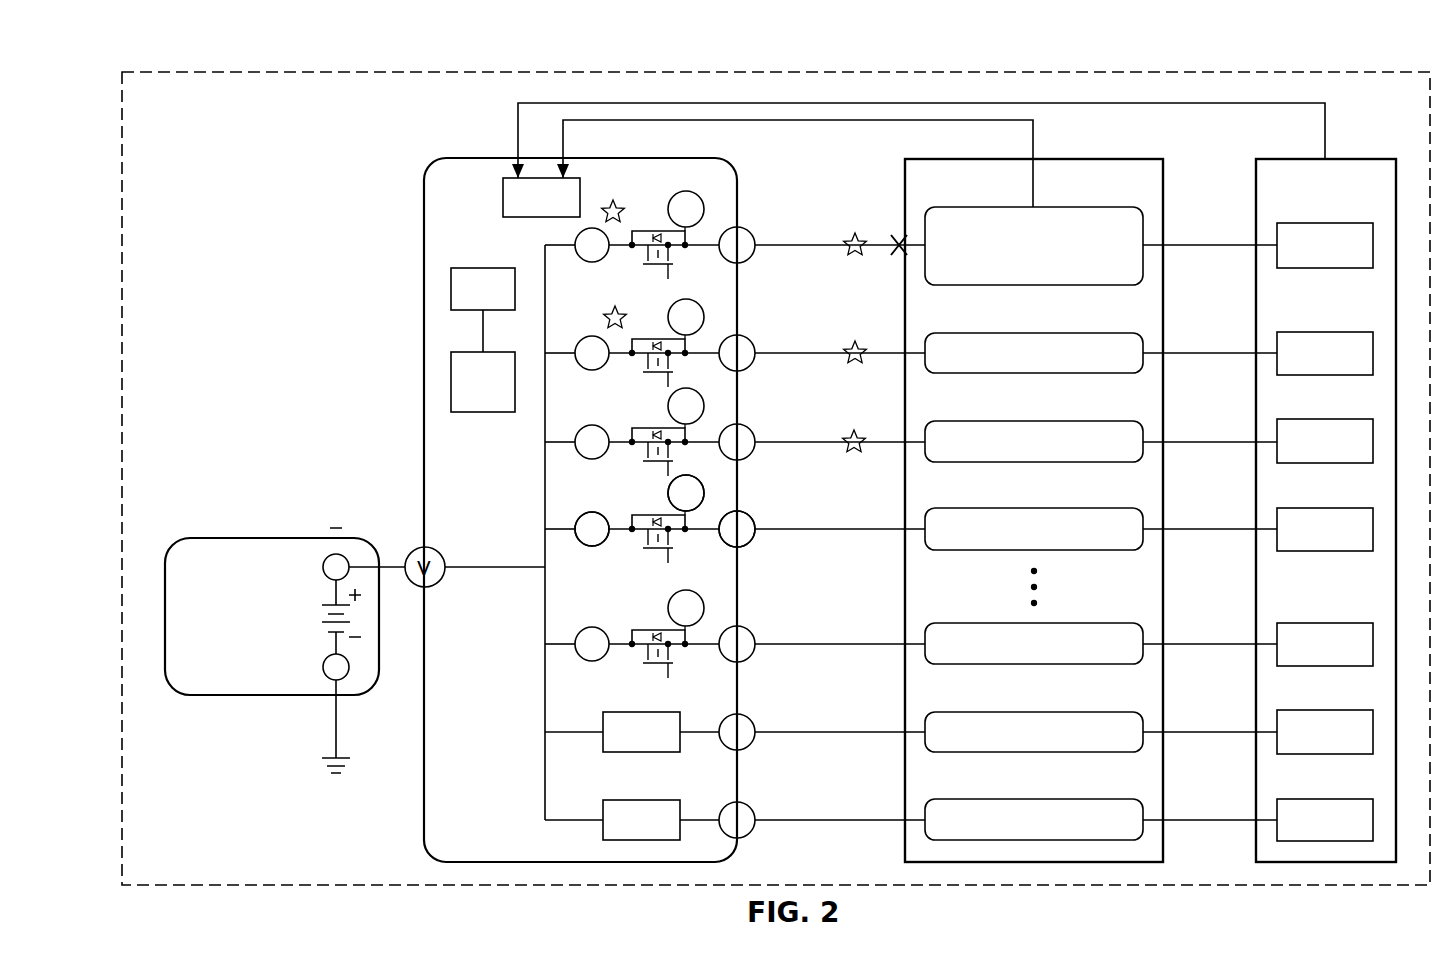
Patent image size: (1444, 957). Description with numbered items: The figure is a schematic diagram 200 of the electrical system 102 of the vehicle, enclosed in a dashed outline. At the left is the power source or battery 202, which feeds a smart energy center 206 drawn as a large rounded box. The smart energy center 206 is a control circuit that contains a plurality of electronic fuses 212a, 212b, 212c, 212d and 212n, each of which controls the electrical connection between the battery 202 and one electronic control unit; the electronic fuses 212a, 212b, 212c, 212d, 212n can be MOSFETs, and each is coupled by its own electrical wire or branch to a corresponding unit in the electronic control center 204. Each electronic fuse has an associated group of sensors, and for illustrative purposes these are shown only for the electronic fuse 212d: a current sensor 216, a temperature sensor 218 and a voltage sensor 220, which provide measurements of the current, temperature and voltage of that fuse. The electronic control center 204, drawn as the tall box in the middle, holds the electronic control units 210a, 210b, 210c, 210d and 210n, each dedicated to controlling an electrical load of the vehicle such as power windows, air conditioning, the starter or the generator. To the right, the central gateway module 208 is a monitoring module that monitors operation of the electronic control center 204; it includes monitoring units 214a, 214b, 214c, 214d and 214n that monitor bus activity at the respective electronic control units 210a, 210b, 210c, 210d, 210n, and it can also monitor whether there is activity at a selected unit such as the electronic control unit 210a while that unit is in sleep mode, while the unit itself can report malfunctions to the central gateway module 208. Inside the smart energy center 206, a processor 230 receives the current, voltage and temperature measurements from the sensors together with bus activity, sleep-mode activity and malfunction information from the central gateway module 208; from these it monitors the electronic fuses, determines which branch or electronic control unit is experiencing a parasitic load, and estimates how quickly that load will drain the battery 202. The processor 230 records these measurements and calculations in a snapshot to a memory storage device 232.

The schematic diagram 200 is at (174, 38).
The electrical system 102 is at (267, 71).
The battery 202 is at (272, 538).
The electronic control center 204 is at (1098, 160).
The smart energy center 206 is at (432, 166).
The central gateway module 208 is at (1344, 160).
The electronic control unit 210a is at (1066, 207).
The electronic control unit 210b is at (1066, 333).
The electronic control unit 210c is at (1066, 421).
The electronic control unit 210d is at (1066, 508).
The electronic control unit 210n is at (1066, 799).
The electronic fuse 212a is at (690, 236).
The electronic fuse 212b is at (690, 344).
The electronic fuse 212c is at (690, 433).
The electronic fuse 212d is at (690, 520).
The electronic fuse 212n is at (680, 808).
The monitoring unit 214a is at (1325, 245).
The monitoring unit 214b is at (1325, 353).
The monitoring unit 214c is at (1325, 441).
The monitoring unit 214d is at (1325, 529).
The monitoring unit 214n is at (1325, 820).
The current sensor 216 is at (596, 547).
The temperature sensor 218 is at (668, 492).
The voltage sensor 220 is at (748, 541).
The processor 230 is at (483, 382).
The memory storage device 232 is at (483, 310).